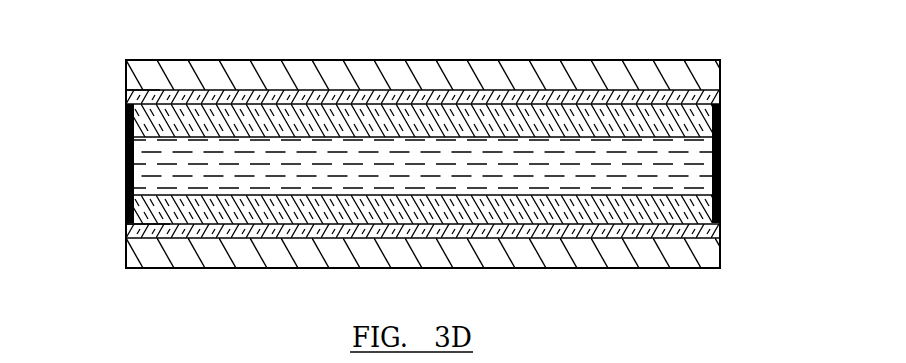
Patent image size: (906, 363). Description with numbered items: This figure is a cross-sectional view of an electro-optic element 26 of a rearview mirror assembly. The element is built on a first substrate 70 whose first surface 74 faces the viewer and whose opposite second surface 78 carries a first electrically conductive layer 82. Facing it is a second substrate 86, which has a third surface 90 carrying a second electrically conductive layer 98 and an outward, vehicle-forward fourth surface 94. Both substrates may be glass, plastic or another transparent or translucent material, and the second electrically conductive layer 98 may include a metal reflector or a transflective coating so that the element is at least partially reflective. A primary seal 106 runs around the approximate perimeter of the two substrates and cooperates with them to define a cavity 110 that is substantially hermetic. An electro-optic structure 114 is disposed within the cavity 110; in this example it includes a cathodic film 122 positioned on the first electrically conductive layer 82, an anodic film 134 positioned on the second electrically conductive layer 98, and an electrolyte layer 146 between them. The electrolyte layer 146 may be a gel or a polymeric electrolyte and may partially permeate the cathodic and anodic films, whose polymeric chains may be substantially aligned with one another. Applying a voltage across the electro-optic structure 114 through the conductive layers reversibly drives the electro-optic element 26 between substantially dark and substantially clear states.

The electro-optic element 26 is at (99, 115).
The first substrate 70 is at (720, 76).
The first surface 74 is at (697, 60).
The second surface 78 is at (690, 93).
The first electrically conductive layer 82 is at (128, 97).
The second substrate 86 is at (146, 250).
The third surface 90 is at (160, 226).
The fourth surface 94 is at (205, 268).
The second electrically conductive layer 98 is at (715, 233).
The primary seal 106 is at (720, 147).
The cavity 110 is at (333, 168).
The electro-optic structure 114 is at (126, 171).
The cathodic film 122 is at (700, 118).
The anodic film 134 is at (718, 213).
The electrolyte layer 146 is at (698, 176).